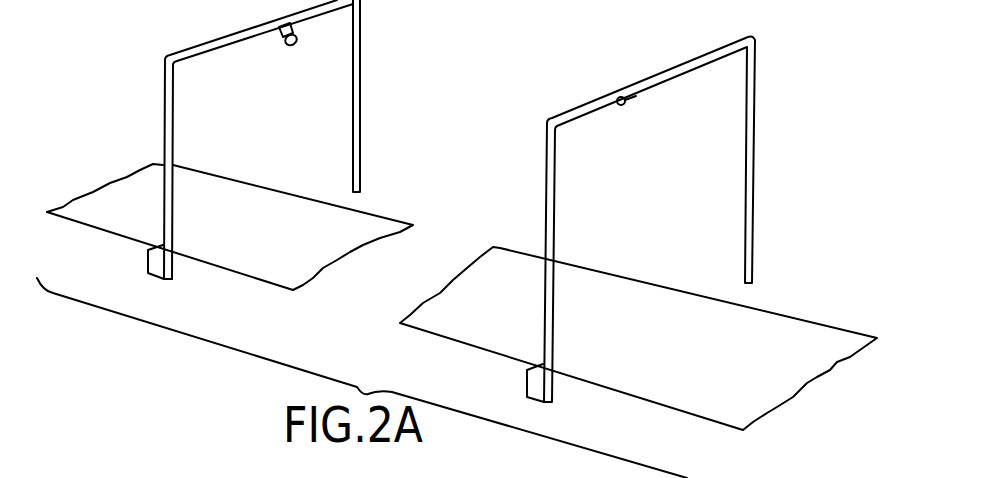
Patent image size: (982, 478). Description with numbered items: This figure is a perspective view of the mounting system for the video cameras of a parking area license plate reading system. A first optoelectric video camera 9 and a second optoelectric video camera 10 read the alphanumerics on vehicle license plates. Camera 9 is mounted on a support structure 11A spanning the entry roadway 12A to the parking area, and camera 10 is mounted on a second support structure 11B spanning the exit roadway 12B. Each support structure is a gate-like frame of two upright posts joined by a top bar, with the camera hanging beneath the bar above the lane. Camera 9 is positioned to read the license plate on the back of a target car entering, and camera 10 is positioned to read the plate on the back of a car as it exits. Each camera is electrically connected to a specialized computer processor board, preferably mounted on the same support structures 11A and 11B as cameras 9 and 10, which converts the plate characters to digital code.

The first optoelectric video camera 9 is at (298, 23).
The second optoelectric video camera 10 is at (633, 103).
The support structure 11A is at (360, 93).
The support structure 11B is at (752, 205).
The entry roadway 12A is at (360, 212).
The exit roadway 12B is at (777, 318).